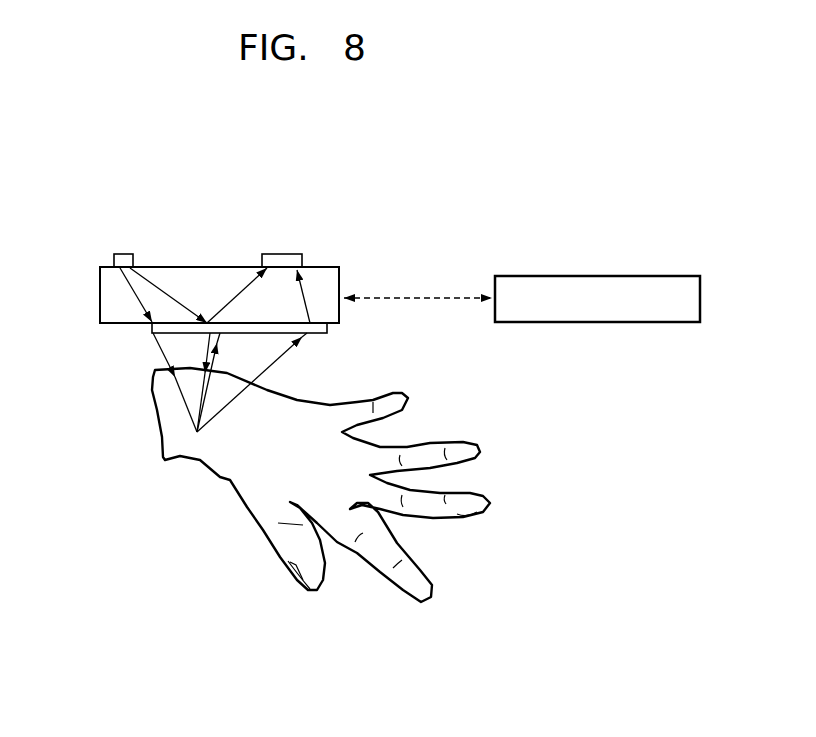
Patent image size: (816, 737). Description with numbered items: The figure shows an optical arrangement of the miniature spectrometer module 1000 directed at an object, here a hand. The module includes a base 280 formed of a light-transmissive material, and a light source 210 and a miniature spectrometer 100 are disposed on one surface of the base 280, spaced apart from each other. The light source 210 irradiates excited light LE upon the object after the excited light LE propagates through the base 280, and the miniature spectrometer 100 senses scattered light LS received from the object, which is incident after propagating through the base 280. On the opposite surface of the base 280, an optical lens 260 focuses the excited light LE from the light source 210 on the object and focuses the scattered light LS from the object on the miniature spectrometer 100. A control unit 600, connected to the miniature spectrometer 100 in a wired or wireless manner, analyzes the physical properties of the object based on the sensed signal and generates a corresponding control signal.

The miniature spectrometer module 1000 is at (548, 168).
The control unit 600 is at (597, 275).
The base 280 is at (100, 323).
The optical lens 260 is at (152, 330).
The light source 210 is at (123, 254).
The miniature spectrometer 100 is at (283, 254).
The excited light LE is at (168, 298).
The scattered light LS is at (280, 357).